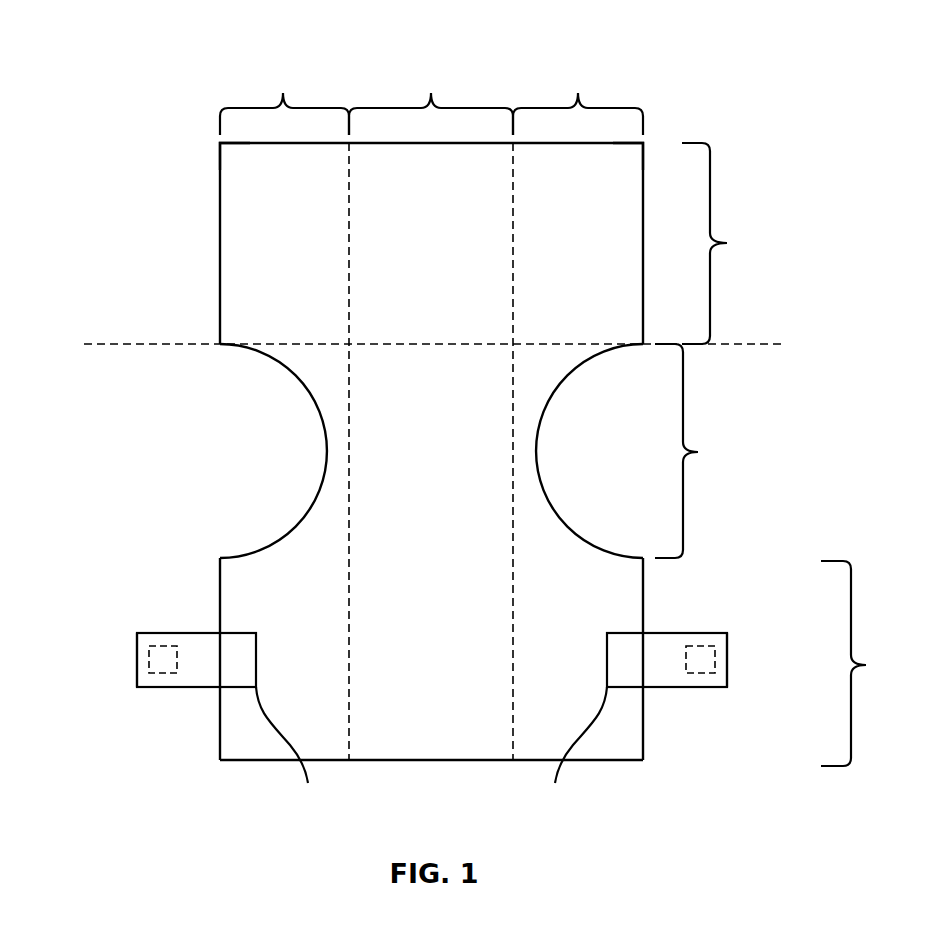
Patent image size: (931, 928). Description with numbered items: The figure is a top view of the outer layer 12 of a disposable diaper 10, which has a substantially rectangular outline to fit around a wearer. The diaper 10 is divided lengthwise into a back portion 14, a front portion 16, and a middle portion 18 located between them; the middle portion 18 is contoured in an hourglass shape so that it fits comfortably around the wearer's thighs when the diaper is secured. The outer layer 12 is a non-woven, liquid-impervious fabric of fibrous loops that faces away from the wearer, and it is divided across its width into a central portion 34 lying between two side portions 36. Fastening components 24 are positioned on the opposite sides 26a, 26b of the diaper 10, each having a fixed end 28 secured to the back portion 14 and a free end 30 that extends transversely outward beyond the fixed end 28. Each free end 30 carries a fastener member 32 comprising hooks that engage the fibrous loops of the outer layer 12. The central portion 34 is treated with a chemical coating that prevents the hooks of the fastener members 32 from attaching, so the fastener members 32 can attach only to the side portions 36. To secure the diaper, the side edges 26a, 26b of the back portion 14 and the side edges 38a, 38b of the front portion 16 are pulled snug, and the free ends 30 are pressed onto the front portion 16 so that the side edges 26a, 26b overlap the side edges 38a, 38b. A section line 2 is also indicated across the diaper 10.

The disposable diaper 10 is at (116, 41).
The outer layer 12 is at (240, 220).
The back portion 14 is at (863, 663).
The front portion 16 is at (724, 243).
The middle portion 18 is at (698, 451).
The fastening components 24 is at (205, 642).
The side edge of back portion 26a is at (220, 740).
The side edge of back portion 26b is at (643, 740).
The fixed end 28 is at (431, 753).
The free end 30 is at (137, 633).
The fastener member 32 is at (147, 664).
The central portion 34 is at (431, 99).
The side portions 36 is at (431, 99).
The side edge of front portion 38a is at (221, 143).
The side edge of front portion 38b is at (643, 143).
The section line 2- 2 is at (782, 376).